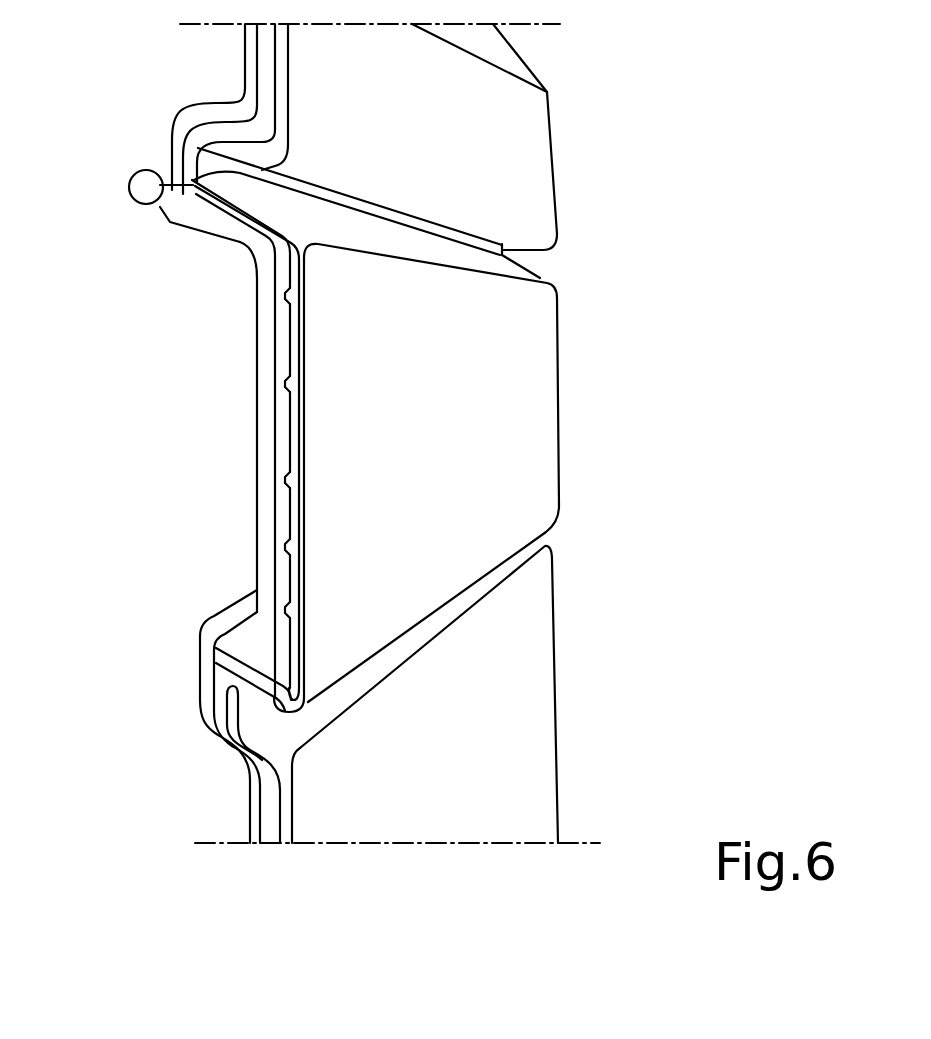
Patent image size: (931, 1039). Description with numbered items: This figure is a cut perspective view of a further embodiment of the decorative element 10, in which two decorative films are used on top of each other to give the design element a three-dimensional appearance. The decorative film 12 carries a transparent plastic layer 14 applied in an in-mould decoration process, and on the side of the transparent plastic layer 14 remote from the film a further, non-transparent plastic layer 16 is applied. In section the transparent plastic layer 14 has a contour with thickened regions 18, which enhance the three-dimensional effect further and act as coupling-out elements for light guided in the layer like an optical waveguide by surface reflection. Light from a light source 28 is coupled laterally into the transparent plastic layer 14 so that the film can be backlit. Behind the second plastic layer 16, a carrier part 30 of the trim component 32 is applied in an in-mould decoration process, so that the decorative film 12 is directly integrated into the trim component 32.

The decorative element 10 is at (602, 377).
The film 12 is at (535, 328).
The transparent plastic layer 14 is at (293, 280).
The further plastic layer 16 is at (262, 247).
The thickened sub-region 18 is at (290, 478).
The light source 28 is at (145, 196).
The carrier part 30 is at (200, 236).
The trim component 32 is at (588, 734).